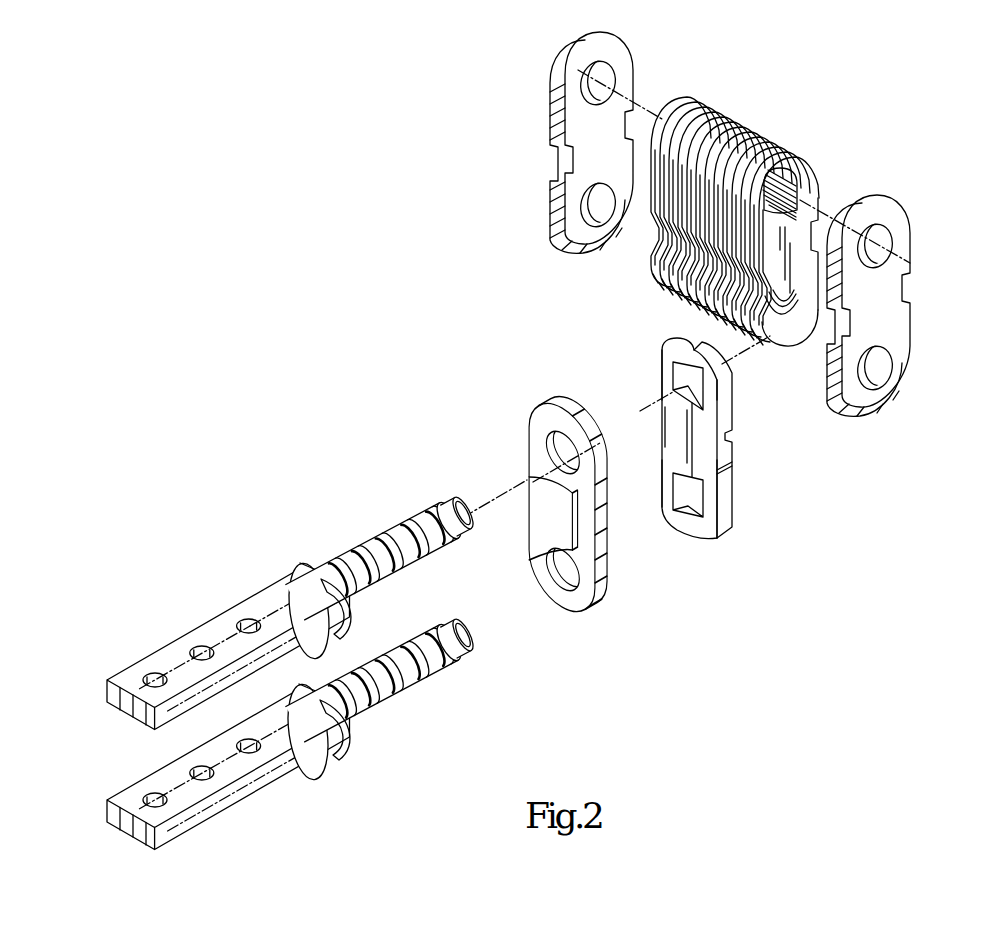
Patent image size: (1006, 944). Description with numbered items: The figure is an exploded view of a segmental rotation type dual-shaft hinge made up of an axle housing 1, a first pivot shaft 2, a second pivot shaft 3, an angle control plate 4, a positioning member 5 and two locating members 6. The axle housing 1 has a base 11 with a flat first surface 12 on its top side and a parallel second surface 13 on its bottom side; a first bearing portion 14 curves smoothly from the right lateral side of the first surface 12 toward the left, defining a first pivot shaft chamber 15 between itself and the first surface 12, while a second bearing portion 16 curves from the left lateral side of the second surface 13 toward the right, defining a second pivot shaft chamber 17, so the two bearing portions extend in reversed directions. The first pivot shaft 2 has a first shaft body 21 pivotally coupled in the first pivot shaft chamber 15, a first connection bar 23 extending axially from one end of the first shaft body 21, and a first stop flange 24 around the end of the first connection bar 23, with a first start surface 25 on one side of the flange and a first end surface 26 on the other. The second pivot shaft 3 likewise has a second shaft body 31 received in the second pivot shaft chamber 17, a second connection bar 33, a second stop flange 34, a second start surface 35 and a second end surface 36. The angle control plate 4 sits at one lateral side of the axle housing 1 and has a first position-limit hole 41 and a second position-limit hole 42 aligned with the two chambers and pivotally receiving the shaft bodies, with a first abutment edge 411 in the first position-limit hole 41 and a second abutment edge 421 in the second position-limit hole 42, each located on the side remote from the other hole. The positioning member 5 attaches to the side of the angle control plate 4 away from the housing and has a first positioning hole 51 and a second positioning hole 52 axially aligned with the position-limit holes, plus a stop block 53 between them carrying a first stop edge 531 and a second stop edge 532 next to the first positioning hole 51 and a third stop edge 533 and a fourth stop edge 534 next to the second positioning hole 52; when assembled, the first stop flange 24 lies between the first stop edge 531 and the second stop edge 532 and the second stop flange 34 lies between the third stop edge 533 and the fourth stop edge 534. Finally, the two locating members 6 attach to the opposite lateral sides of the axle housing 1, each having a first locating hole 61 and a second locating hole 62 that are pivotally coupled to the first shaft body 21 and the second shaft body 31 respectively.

The axle housing 1 is at (734, 232).
The base 11 is at (758, 237).
The first surface 12 is at (805, 200).
The second surface 13 is at (766, 278).
The first bearing portion 14 is at (703, 103).
The first pivot shaft chamber 15 is at (796, 166).
The second bearing portion 16 is at (773, 345).
The second pivot shaft chamber 17 is at (762, 318).
The first pivot shaft 2 is at (280, 593).
The first shaft body 21 is at (408, 527).
The first connection bar 23 is at (257, 605).
The first stop flange 24 is at (346, 612).
The first start surface 25 is at (277, 623).
The first end surface 26 is at (325, 578).
The second pivot shaft 3 is at (291, 740).
The second shaft body 31 is at (428, 667).
The second connection bar 33 is at (240, 788).
The second stop flange 34 is at (343, 750).
The second start surface 35 is at (314, 734).
The second end surface 36 is at (316, 768).
The angle control plate 4 is at (688, 464).
The first position-limit hole 41 is at (655, 380).
The first abutment edge 411 is at (675, 374).
The second position-limit hole 42 is at (718, 525).
The second abutment edge 421 is at (712, 532).
The positioning member 5 is at (547, 502).
The first positioning hole 51 is at (566, 450).
The second positioning hole 52 is at (566, 567).
The stop block 53 is at (553, 525).
The first stop edge 531 is at (574, 517).
The second stop edge 532 is at (550, 484).
The third stop edge 533 is at (574, 548).
The fourth stop edge 534 is at (550, 555).
The locating member 6 is at (729, 225).
The first locating hole 61 is at (606, 70).
The second locating hole 62 is at (596, 215).